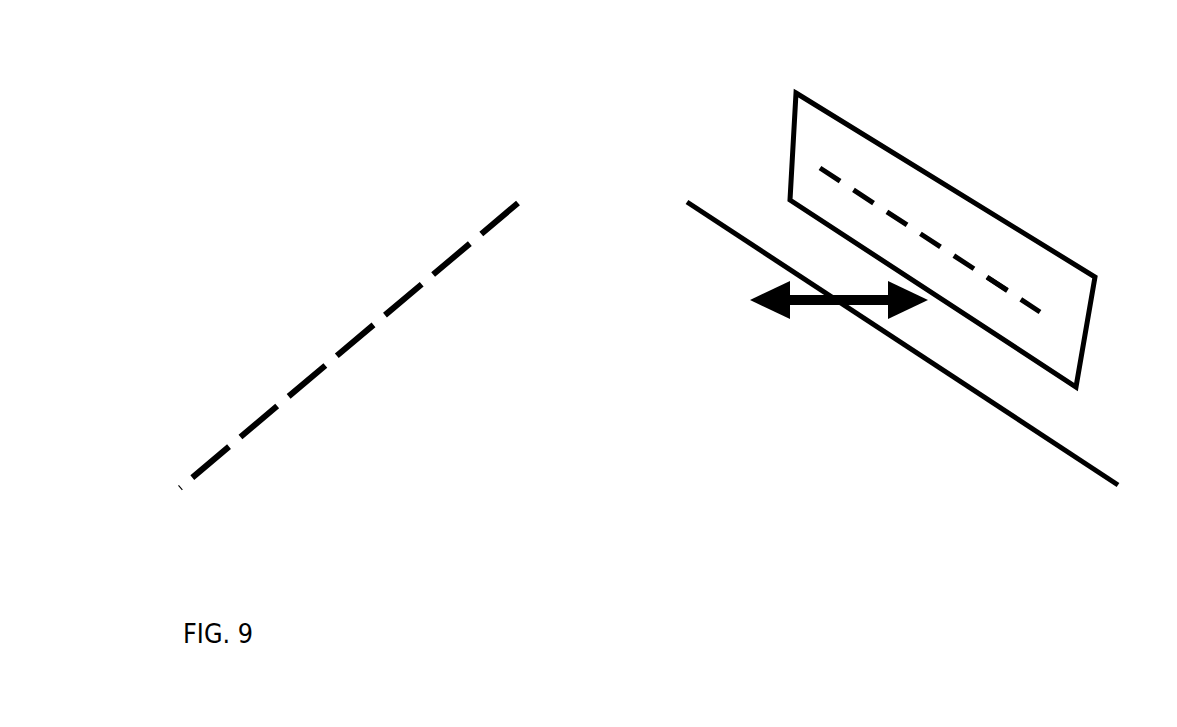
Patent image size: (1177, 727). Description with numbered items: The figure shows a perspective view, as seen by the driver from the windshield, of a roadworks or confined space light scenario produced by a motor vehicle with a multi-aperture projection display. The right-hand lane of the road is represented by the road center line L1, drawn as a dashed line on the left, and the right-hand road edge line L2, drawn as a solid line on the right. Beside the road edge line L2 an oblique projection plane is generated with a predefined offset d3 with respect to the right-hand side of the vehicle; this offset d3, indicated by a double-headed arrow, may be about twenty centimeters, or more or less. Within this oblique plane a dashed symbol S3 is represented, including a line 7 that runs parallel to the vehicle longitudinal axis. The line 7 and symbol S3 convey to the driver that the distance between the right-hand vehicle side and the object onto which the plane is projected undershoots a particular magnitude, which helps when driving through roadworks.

The road center line L1 is at (308, 373).
The road edge line L2 is at (1087, 458).
The symbol S3 is at (936, 205).
The line 7 is at (998, 278).
The distance d3 is at (813, 310).